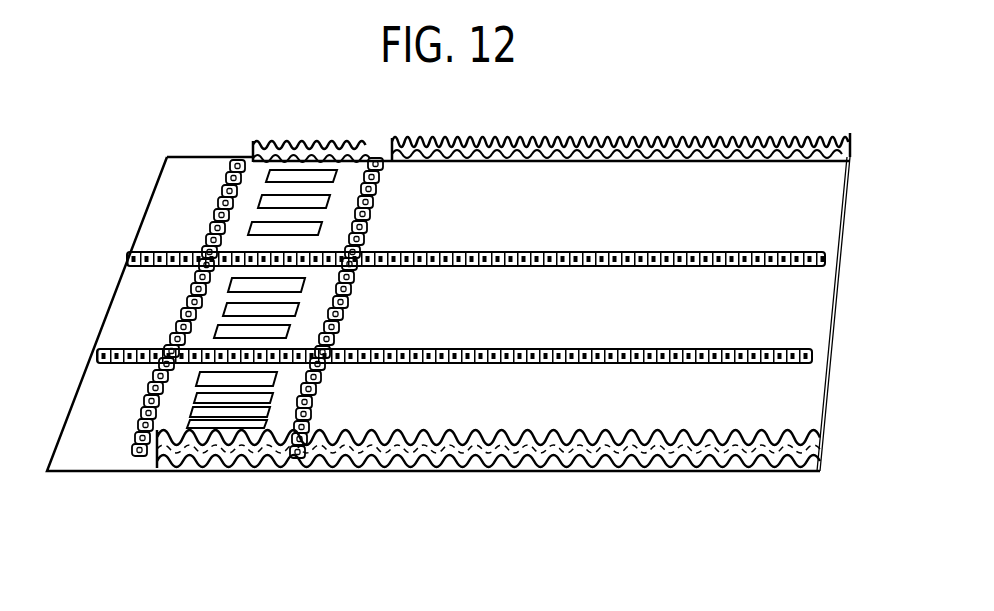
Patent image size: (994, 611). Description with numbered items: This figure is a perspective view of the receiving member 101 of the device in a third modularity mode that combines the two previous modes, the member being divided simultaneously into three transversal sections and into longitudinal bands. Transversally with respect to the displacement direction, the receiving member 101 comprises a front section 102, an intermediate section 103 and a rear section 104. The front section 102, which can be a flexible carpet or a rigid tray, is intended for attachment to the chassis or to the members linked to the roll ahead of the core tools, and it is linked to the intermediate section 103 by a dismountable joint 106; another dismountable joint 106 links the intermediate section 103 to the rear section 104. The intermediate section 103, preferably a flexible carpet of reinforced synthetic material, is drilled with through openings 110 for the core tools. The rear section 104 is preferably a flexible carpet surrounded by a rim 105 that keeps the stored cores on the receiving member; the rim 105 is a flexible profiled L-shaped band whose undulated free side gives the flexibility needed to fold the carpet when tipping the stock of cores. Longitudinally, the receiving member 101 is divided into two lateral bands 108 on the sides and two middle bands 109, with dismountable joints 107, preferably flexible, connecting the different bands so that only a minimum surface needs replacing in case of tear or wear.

The receiving member 101 is at (195, 106).
The front section 102 is at (80, 468).
The intermediate section 103 is at (310, 130).
The rear section 104 is at (510, 482).
The rim 105 is at (698, 137).
The dismountable joint 106 is at (228, 192).
The dismountable joints 107 is at (130, 251).
The lateral bands 108 is at (792, 193).
The middle bands 109 is at (800, 307).
The through openings 110 is at (218, 460).